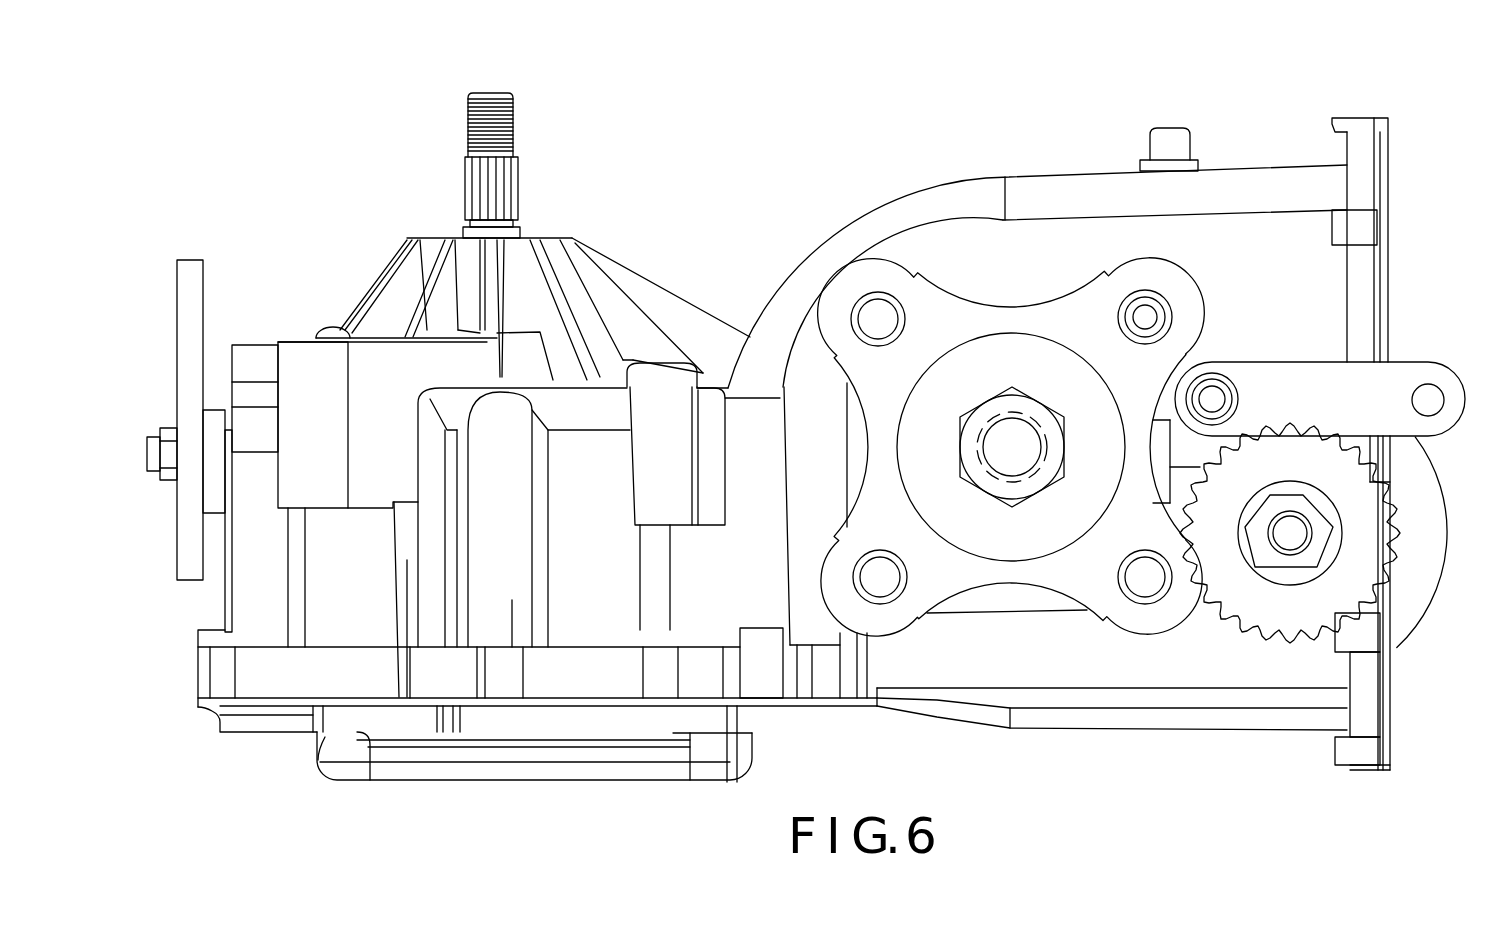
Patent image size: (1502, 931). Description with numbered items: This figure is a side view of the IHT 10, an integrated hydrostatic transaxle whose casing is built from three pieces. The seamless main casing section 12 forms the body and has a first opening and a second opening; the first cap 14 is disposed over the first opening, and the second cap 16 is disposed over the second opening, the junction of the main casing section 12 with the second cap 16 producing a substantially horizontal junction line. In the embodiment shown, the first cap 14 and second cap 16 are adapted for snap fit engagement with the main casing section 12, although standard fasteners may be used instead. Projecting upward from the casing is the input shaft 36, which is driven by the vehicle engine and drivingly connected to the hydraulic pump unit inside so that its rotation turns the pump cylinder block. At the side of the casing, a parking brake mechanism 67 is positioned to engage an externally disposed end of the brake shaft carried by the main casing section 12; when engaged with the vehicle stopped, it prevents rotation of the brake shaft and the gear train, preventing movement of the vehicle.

The IHT 10 is at (697, 198).
The main casing section 12 is at (906, 205).
The first cap 14 is at (1365, 165).
The second cap 16 is at (333, 757).
The input shaft 36 is at (480, 190).
The parking brake mechanism 67 is at (1416, 486).